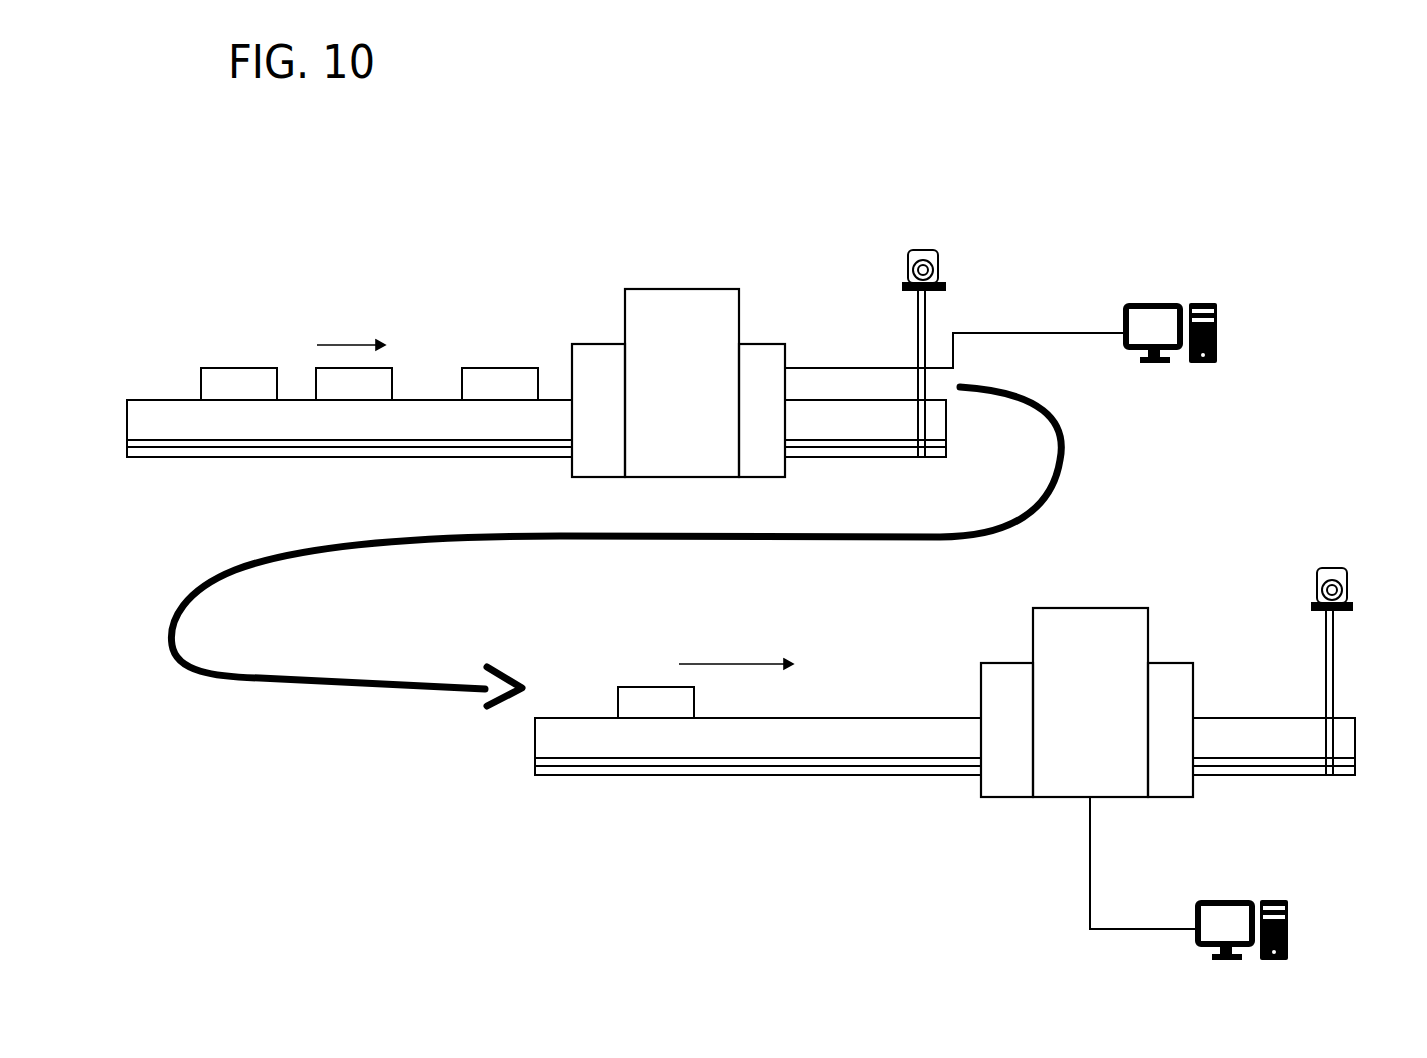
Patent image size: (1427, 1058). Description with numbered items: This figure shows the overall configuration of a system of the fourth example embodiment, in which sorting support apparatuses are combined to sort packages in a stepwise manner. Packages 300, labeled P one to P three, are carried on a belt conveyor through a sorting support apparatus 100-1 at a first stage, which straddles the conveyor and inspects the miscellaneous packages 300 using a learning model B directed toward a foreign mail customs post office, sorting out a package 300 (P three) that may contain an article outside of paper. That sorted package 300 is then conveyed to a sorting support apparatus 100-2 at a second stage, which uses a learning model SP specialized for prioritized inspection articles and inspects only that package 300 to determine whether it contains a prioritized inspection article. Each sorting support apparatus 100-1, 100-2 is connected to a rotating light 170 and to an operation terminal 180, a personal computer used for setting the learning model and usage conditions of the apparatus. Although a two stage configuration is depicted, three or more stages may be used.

The package 300 is at (618, 688).
The sorting support apparatus at a first stage 100-1 is at (740, 310).
The sorting support apparatus at a second stage 100-2 is at (1148, 628).
The rotating light 170 is at (938, 263).
The operation terminal 180 is at (1217, 303).